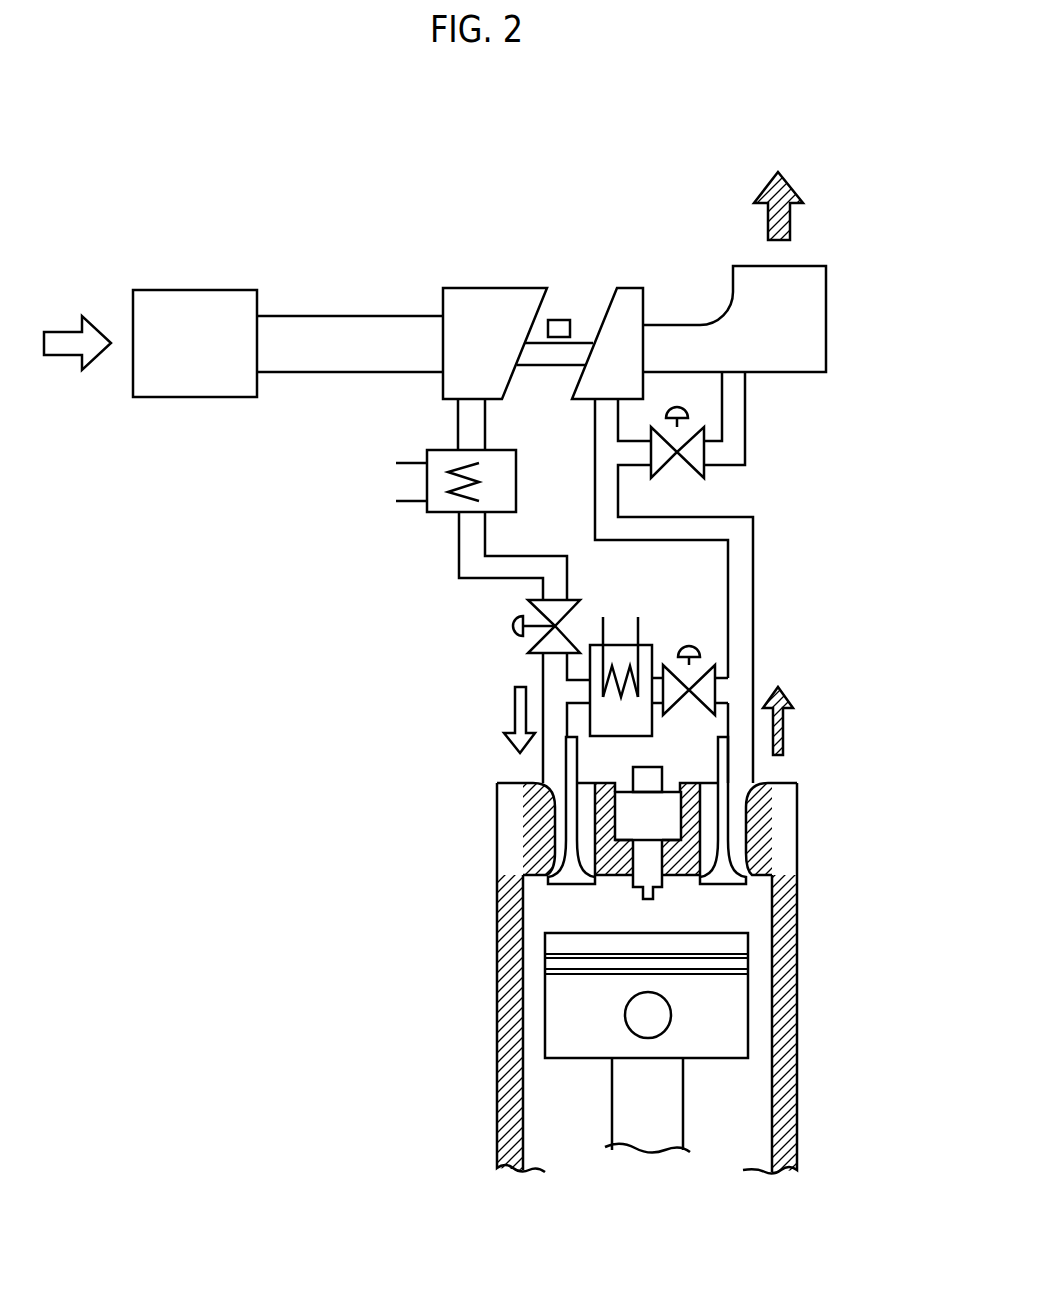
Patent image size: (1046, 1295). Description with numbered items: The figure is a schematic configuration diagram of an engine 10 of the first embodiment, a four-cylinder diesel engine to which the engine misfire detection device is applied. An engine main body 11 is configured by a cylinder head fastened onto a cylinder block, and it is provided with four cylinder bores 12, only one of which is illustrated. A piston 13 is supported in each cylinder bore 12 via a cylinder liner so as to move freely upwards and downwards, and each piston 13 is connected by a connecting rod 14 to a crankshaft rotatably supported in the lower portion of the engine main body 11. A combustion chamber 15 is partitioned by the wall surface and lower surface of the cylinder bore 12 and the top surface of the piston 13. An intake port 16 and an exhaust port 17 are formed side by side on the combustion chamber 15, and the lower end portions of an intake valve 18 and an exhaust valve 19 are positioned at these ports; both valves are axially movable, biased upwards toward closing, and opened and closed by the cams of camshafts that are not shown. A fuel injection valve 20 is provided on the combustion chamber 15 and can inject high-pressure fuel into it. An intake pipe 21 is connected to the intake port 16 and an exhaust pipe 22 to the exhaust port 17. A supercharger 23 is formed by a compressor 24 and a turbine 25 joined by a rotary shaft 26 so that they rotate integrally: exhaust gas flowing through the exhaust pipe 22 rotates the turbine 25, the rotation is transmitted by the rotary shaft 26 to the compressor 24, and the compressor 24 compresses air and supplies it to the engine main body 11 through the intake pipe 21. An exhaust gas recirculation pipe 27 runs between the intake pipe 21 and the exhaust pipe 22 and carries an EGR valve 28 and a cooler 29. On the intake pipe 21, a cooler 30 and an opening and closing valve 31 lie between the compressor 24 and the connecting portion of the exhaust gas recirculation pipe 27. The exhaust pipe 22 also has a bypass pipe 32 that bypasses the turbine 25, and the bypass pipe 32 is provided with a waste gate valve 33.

The engine 10 is at (670, 918).
The engine main body 11 is at (777, 805).
The cylinder bore 12 is at (770, 1090).
The piston 13 is at (570, 1012).
The connecting rod 14 is at (668, 1125).
The combustion chamber 15 is at (692, 915).
The intake port 16 is at (547, 837).
The exhaust port 17 is at (745, 840).
The intake valve 18 is at (557, 860).
The exhaust valve 19 is at (750, 865).
The fuel injection valve 20 is at (672, 790).
The intake pipe 21 is at (468, 565).
The exhaust pipe 22 is at (742, 558).
The supercharger 23 is at (550, 298).
The compressor 24 is at (471, 310).
The turbine 25 is at (628, 305).
The rotary shaft 26 is at (545, 362).
The exhaust gas recirculation pipe 27 is at (657, 685).
The EGR valve 28 is at (710, 690).
The cooler 29 is at (620, 655).
The cooler 30 is at (505, 478).
The opening and closing valve 31 is at (530, 645).
The bypass pipe 32 is at (735, 415).
The waste gate valve 33 is at (706, 455).